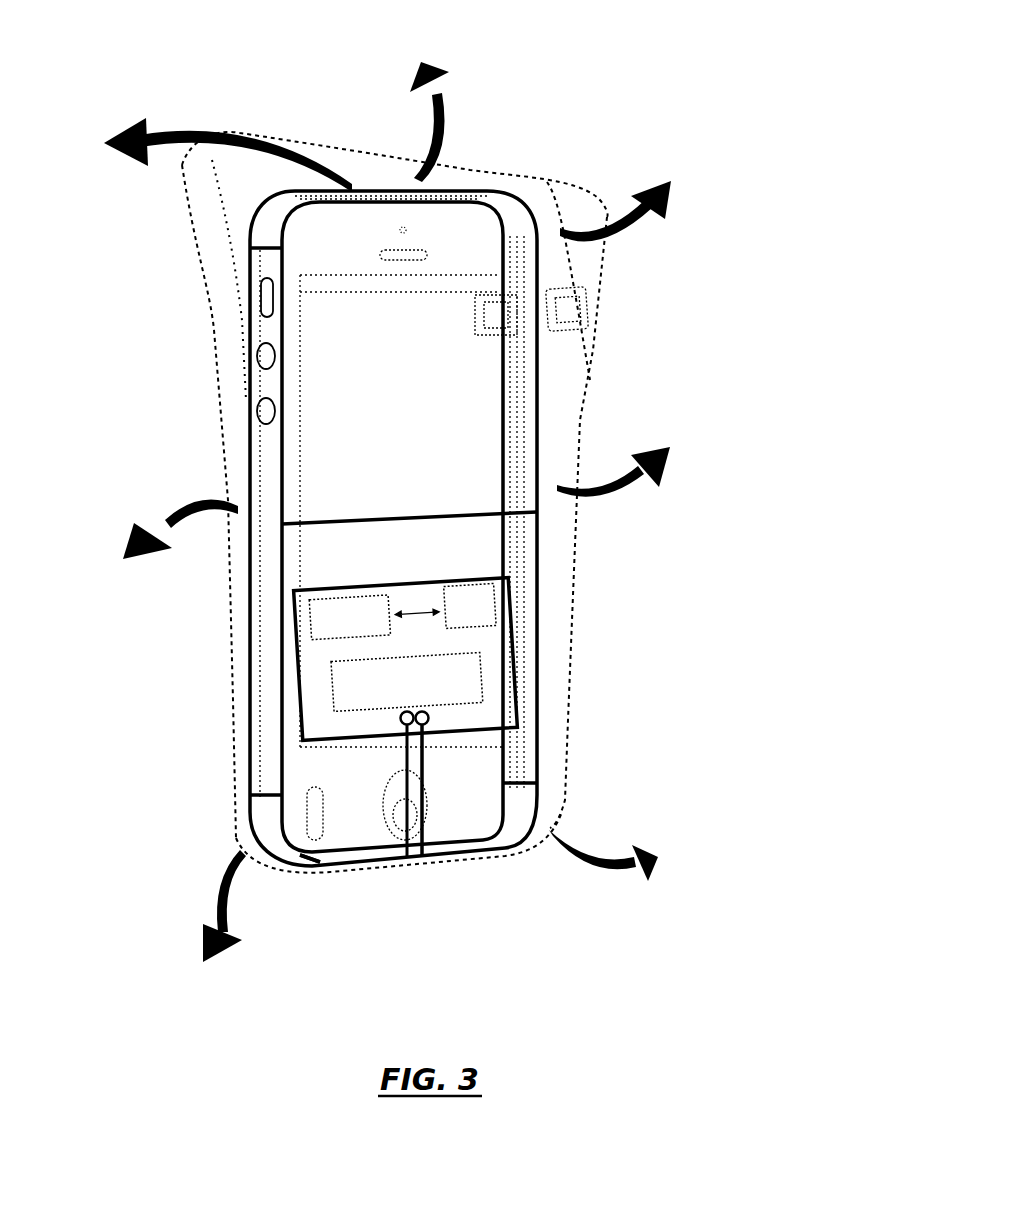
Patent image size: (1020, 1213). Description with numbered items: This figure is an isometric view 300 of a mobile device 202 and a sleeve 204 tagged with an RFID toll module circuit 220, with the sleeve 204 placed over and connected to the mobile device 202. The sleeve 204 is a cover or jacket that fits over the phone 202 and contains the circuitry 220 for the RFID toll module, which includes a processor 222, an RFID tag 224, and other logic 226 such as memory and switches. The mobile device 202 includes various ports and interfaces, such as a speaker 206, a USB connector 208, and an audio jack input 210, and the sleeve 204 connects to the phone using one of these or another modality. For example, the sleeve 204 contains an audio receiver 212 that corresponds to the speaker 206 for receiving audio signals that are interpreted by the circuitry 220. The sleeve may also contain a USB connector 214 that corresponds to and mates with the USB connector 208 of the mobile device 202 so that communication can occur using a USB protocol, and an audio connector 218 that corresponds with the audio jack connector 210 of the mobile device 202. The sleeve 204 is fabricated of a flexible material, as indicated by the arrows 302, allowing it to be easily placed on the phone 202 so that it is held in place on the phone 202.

The isometric view 300 is at (664, 44).
The mobile device 202 is at (367, 190).
The sleeve 204 is at (500, 173).
The speaker 206 is at (480, 324).
The USB connector 208 is at (413, 858).
The audio jack input 210 is at (315, 866).
The audio receiver 212 is at (585, 317).
The USB connector 214 is at (413, 858).
The audio connector 218 is at (315, 866).
The circuitry 220 is at (415, 515).
The processor 222 is at (495, 597).
The RFID tag 224 is at (313, 616).
The other logic 226 is at (483, 678).
The arrows 302 is at (162, 128).